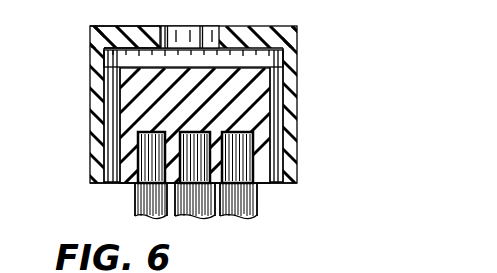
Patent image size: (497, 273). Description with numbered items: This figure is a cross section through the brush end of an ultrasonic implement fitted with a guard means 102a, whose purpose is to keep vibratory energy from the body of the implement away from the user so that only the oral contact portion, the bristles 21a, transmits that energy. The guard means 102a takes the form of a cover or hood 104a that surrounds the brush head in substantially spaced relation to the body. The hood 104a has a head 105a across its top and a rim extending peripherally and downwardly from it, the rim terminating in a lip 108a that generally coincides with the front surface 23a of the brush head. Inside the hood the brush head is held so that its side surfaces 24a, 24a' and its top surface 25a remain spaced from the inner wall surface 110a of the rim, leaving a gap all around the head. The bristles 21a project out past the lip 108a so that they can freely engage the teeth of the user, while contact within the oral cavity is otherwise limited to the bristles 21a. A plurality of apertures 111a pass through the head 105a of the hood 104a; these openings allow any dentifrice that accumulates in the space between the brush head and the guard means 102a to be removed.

The guard means 102a is at (297, 35).
The hood 104a is at (97, 32).
The head 105a is at (257, 31).
The apertures 111a is at (197, 47).
The top surface 25a is at (135, 70).
The side surface 24a is at (189, 125).
The side surface 24a' is at (224, 104).
The lip 108a is at (96, 184).
The inner wall surface 110a is at (293, 169).
The front surface 23a is at (258, 186).
The bristles 21a is at (245, 217).